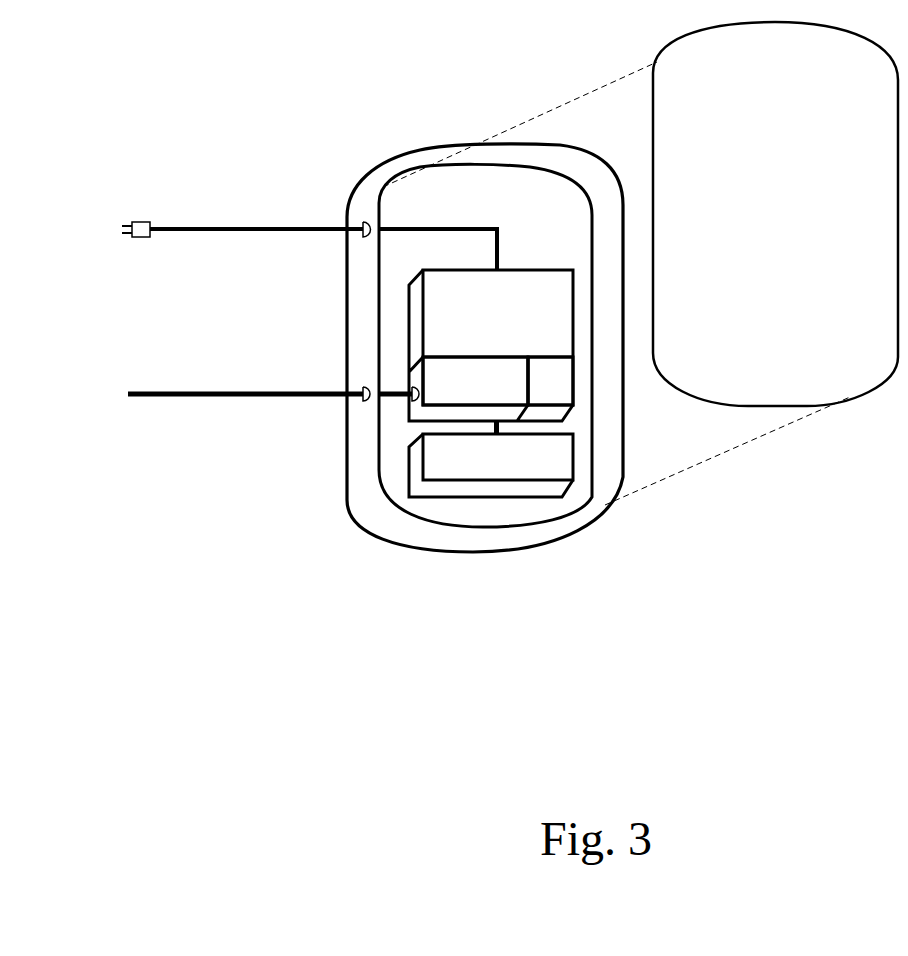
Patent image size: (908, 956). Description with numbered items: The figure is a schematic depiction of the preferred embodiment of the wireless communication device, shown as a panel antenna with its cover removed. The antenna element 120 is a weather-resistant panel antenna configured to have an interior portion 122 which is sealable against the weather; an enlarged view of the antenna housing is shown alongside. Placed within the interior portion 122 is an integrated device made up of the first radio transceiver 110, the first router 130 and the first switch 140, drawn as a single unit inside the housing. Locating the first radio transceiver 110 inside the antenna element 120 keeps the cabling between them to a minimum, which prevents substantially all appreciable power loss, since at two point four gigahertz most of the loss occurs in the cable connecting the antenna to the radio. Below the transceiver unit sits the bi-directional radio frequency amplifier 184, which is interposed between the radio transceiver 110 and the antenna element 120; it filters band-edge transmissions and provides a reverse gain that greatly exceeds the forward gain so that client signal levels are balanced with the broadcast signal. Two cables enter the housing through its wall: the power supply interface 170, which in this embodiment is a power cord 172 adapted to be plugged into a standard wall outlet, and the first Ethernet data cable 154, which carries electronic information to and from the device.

The first radio transceiver 110 is at (417, 322).
The antenna element 120 is at (473, 553).
The interior portion 122 is at (578, 488).
The first router 130 is at (427, 413).
The first switch 140 is at (543, 413).
The first Ethernet data cable 154 is at (217, 397).
The power supply interface 170 is at (258, 212).
The power cord 172 is at (173, 226).
The bi-directional radio frequency amplifier 184 is at (495, 492).